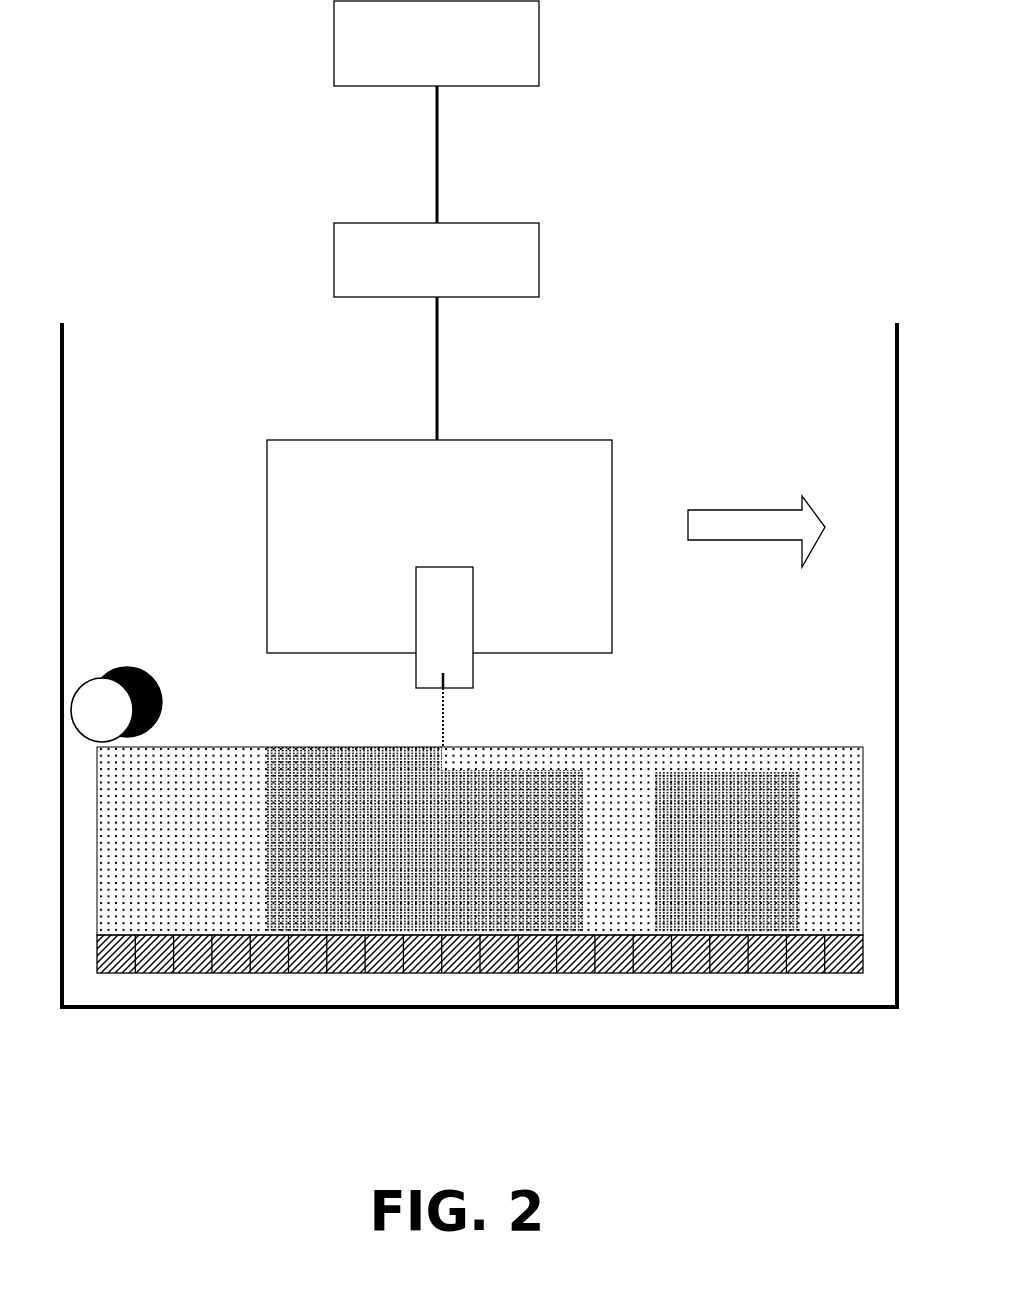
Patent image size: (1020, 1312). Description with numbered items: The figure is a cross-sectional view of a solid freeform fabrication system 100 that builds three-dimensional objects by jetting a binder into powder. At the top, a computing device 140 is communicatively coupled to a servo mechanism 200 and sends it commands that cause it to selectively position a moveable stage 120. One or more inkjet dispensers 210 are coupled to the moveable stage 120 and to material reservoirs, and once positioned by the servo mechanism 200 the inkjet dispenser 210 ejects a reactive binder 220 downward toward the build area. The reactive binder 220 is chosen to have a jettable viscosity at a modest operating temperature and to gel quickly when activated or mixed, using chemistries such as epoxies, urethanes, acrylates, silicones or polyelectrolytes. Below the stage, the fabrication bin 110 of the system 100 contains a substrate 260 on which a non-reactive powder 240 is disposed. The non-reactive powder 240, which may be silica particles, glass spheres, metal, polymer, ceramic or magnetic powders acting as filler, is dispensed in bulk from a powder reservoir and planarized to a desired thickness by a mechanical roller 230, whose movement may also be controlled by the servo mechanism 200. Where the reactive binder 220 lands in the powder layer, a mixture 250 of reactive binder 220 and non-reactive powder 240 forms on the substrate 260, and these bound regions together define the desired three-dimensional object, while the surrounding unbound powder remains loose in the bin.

The solid freeform fabrication system 100 is at (774, 160).
The fabrication bin 110 is at (109, 312).
The moveable stage 120 is at (418, 494).
The computing device 140 is at (539, 43).
The servo mechanism 200 is at (539, 258).
The inkjet dispenser 210 is at (473, 601).
The reactive binder 220 is at (447, 719).
The mechanical roller 230 is at (113, 695).
The non-reactive powder 240 is at (185, 748).
The mixture 250 is at (312, 747).
The substrate 260 is at (610, 1003).